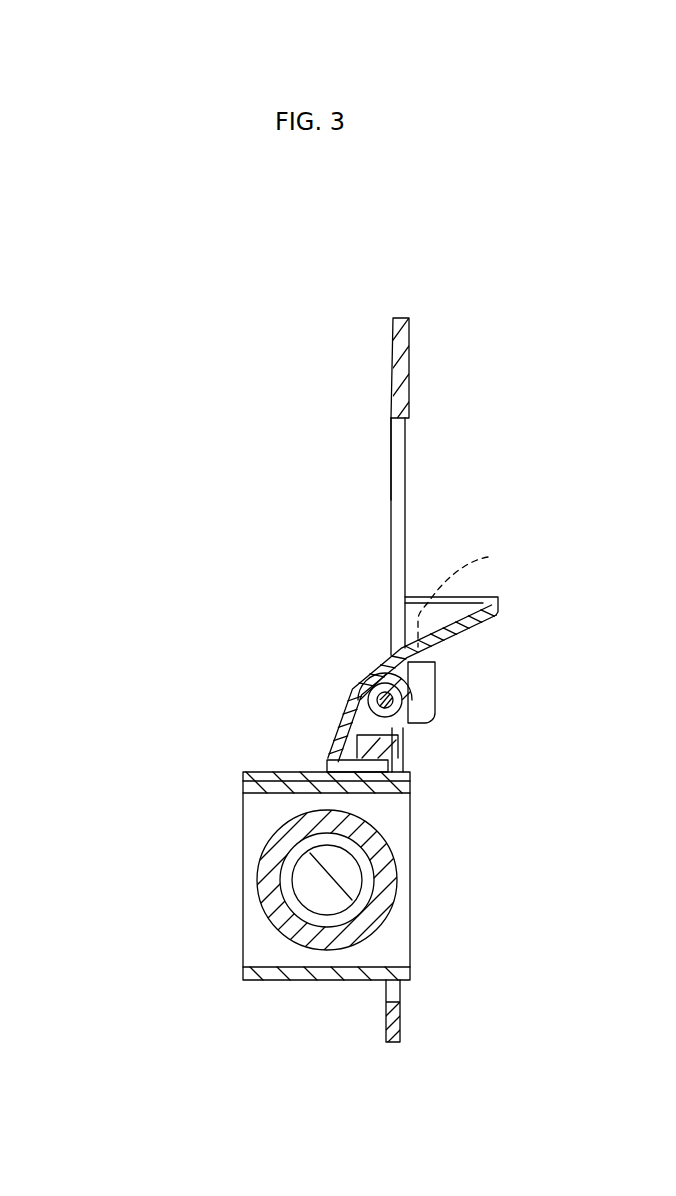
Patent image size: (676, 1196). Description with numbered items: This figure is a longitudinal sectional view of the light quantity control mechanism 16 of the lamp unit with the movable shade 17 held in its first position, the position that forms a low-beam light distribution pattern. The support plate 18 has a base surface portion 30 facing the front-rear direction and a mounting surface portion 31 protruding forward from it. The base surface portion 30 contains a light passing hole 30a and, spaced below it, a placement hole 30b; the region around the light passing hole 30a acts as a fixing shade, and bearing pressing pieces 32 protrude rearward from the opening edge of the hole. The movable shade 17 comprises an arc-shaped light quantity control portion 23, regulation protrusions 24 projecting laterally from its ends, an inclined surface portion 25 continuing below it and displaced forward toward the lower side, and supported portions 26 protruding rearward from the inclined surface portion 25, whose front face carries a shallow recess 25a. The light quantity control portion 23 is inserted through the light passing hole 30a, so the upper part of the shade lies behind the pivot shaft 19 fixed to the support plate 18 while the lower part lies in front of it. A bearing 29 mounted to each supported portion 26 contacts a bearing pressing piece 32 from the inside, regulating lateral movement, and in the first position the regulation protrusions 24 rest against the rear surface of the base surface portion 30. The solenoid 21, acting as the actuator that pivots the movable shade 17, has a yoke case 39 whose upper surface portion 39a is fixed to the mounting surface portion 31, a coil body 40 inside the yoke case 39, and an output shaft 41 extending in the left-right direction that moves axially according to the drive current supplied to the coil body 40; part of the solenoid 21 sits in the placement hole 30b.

The light quantity control mechanism 16 is at (84, 402).
The movable shade 17 is at (455, 642).
The support plate 18 is at (402, 405).
The pivot shaft 19 is at (414, 724).
The solenoid 21 is at (415, 973).
The light quantity control portion 23 is at (475, 613).
The regulation protrusion 24 is at (474, 596).
The inclined surface portion 25 is at (360, 677).
The shallow recess 25a is at (350, 717).
The supported portion 26 is at (420, 716).
The bearing 29 is at (408, 732).
The base surface portion 30 is at (405, 503).
The light passing hole 30a is at (405, 432).
The placement hole 30b is at (392, 1002).
The mounting surface portion 31 is at (247, 777).
The bearing pressing piece 32 is at (435, 690).
The yoke case 39 is at (302, 981).
The upper surface portion 39a is at (243, 783).
The coil body 40 is at (383, 903).
The output shaft 41 is at (325, 880).